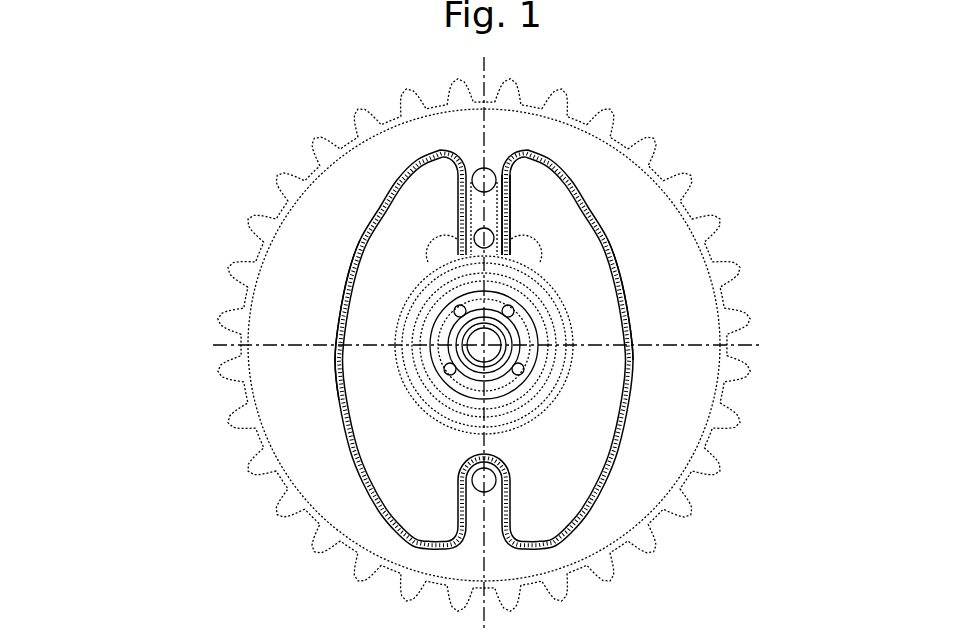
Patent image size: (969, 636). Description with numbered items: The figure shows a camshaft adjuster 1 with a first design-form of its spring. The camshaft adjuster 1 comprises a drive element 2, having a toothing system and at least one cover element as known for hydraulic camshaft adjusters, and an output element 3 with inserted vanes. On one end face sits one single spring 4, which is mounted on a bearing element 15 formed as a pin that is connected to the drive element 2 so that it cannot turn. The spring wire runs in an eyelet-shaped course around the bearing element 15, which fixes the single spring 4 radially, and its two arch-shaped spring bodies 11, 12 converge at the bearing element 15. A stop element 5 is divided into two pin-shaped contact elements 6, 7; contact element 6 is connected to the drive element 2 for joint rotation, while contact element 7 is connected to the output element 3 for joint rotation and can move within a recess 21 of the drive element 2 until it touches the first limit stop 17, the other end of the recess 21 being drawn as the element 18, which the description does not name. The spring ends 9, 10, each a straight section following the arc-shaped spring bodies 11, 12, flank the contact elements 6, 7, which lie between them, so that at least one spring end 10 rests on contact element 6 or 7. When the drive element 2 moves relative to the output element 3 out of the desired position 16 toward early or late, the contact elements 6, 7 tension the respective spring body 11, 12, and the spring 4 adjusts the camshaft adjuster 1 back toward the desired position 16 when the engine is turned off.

The camshaft adjuster 1 is at (160, 159).
The desired position 16 is at (107, 131).
The drive element 2 is at (283, 413).
The output element 3 is at (587, 349).
The recess 21 is at (523, 240).
The spring 4 is at (347, 314).
The stop element 5 is at (399, 119).
The contact element 6 is at (480, 168).
The contact element 7 is at (477, 238).
The spring end 9 is at (463, 242).
The spring end 10 is at (505, 213).
The spring body 11 is at (340, 363).
The spring body 12 is at (632, 313).
The bearing element 15 is at (487, 477).
The first limit stop 17 is at (428, 266).
The right retaining tab 18 is at (540, 266).